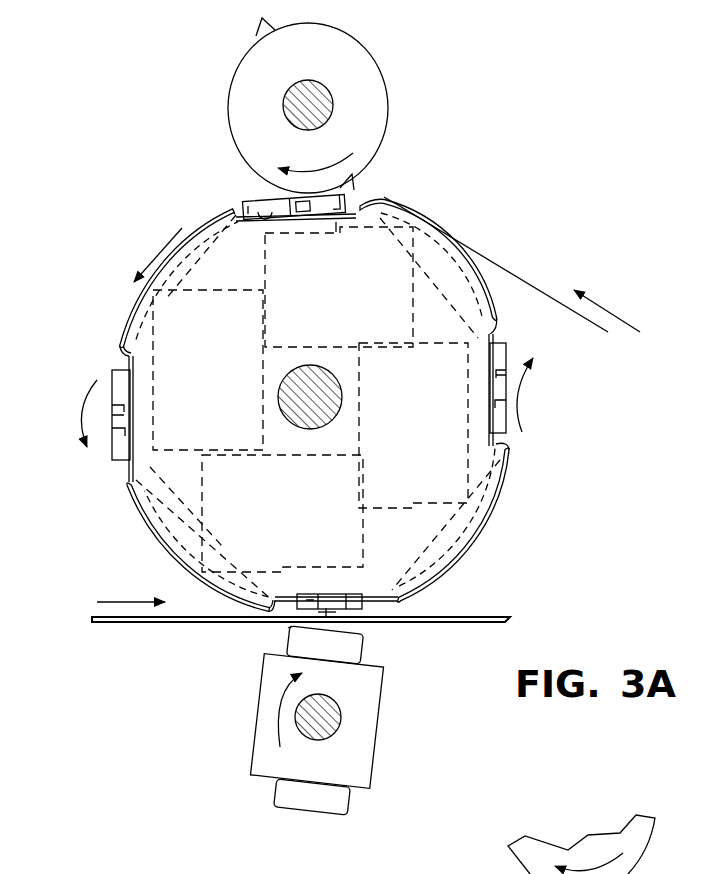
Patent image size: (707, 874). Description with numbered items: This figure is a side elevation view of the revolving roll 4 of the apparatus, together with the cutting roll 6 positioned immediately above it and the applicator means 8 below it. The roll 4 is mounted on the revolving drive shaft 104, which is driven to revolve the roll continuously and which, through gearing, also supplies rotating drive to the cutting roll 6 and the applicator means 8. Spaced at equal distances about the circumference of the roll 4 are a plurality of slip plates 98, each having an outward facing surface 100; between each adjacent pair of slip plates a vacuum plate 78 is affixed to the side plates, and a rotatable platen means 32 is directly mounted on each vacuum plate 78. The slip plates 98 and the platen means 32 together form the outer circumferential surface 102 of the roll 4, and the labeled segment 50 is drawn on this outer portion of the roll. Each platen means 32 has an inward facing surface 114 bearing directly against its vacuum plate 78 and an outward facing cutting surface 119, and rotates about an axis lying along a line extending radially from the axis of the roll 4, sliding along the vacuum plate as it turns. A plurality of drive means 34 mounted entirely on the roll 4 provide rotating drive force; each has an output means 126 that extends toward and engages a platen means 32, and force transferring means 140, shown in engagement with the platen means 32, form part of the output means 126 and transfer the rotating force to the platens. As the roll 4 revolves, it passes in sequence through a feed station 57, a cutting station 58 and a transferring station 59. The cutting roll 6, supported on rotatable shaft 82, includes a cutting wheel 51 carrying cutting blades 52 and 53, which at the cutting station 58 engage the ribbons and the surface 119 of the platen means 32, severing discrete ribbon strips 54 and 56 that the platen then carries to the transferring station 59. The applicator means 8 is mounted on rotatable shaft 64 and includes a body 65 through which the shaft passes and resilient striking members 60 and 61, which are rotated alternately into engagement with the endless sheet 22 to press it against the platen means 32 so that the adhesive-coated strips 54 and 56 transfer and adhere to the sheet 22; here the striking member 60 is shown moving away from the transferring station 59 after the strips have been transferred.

The revolving roll 4 is at (482, 546).
The cutting roll 6 is at (410, 50).
The applicator means 8 is at (250, 748).
The endless sheet 22 is at (132, 623).
The rotatable platen means 32 is at (238, 205).
The drive means 34 is at (316, 324).
The drum shell segment 50 is at (158, 346).
The cutting wheel 51 is at (236, 60).
The cutting blade 52 is at (350, 185).
The cutting blade 53 is at (268, 32).
The discrete ribbon strip 54 is at (332, 608).
The discrete ribbon strip 56 is at (326, 610).
The feed station 57 is at (436, 212).
The cutting station 58 is at (380, 196).
The transferring station 59 is at (282, 630).
The striking member 60 is at (364, 640).
The striking member 61 is at (312, 815).
The rotatable shaft 64 is at (342, 716).
The body 65 is at (366, 750).
The vacuum plate 78 is at (706, 795).
The rotatable shaft 82 is at (290, 108).
The slip plate 98 is at (198, 214).
The outward facing surface 100 is at (124, 318).
The outer circumferential surface 102 is at (484, 272).
The revolving drive shaft 104 is at (290, 368).
The inward facing surface 114 is at (336, 222).
The outward facing cutting surface 119 is at (262, 208).
The output means 126 is at (356, 588).
The force transferring means 140 is at (290, 203).